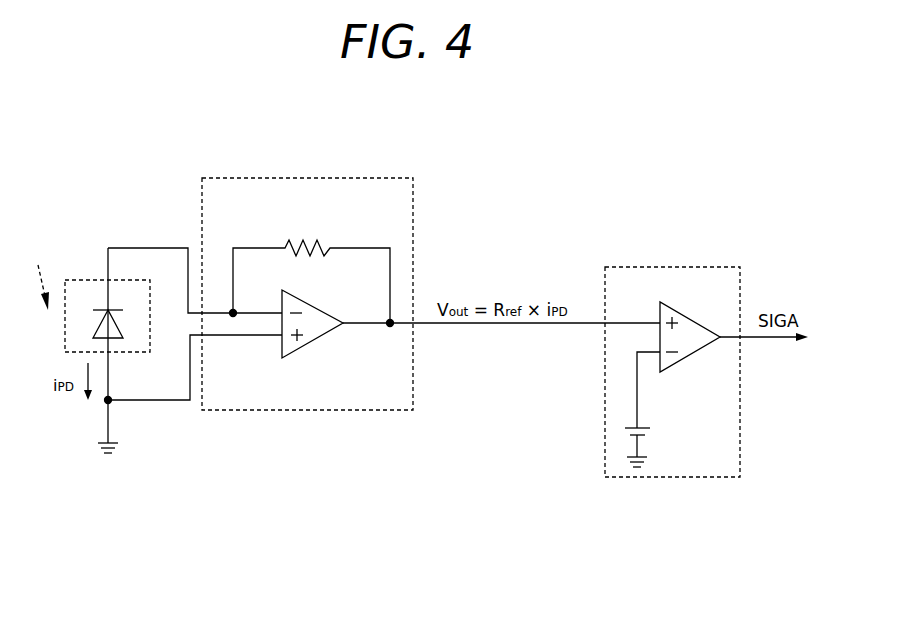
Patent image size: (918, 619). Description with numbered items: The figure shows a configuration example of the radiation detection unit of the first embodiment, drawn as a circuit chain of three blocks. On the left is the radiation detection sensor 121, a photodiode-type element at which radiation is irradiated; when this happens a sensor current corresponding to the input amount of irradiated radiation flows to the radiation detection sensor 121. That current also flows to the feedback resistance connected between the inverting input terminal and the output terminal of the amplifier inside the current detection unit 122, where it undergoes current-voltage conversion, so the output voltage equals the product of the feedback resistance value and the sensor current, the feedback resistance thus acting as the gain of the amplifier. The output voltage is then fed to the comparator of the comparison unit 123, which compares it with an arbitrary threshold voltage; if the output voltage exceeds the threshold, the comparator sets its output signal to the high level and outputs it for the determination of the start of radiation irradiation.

The radiation detection sensor 121 is at (83, 280).
The current detection unit 122 is at (362, 178).
The comparison unit 123 is at (680, 267).